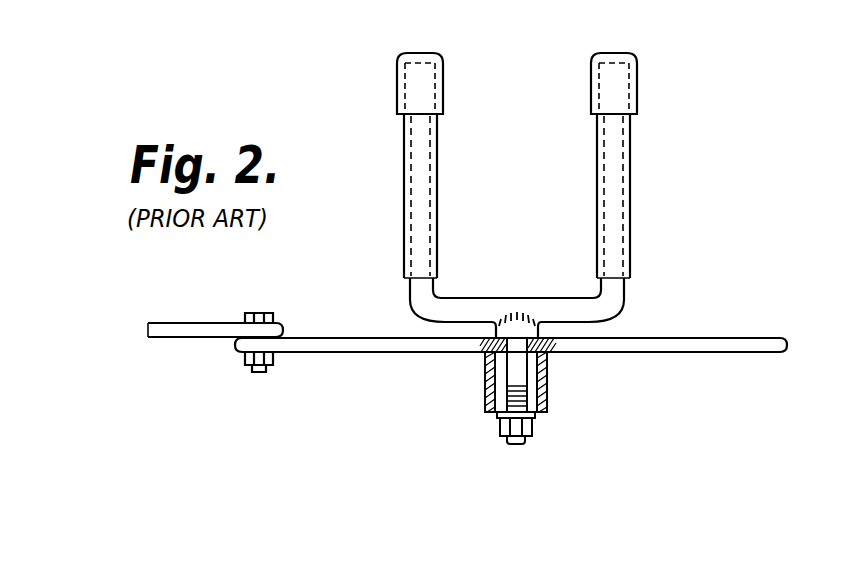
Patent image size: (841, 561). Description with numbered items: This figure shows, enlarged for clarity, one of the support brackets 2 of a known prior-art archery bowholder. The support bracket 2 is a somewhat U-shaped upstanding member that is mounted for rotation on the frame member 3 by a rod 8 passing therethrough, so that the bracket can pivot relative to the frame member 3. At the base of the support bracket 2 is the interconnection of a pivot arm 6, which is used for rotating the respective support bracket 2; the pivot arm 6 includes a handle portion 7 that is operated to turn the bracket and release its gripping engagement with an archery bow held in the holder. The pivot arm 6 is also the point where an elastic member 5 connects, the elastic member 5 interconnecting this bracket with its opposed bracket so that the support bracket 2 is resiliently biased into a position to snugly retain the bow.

The support bracket 2 is at (392, 396).
The frame member 3 is at (547, 380).
The elastic member 5 is at (212, 339).
The pivot arm 6 is at (350, 355).
The handle portion 7 is at (769, 336).
The rod 8 is at (492, 366).